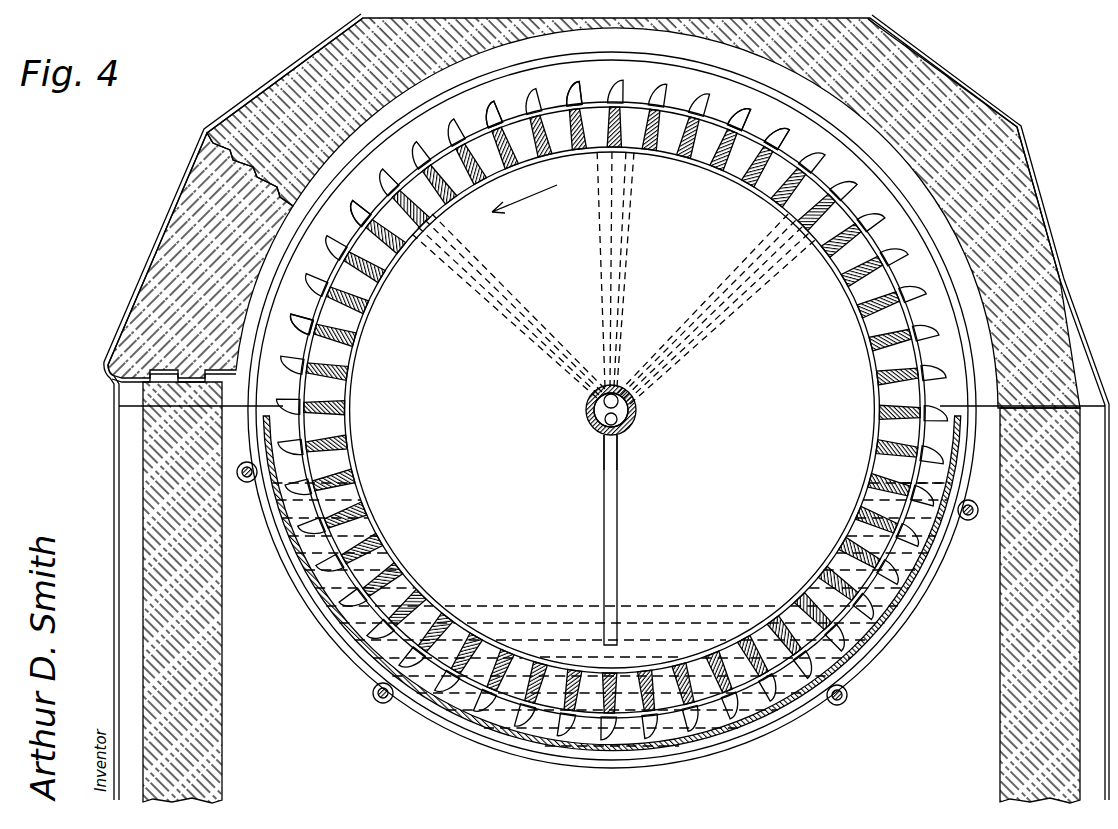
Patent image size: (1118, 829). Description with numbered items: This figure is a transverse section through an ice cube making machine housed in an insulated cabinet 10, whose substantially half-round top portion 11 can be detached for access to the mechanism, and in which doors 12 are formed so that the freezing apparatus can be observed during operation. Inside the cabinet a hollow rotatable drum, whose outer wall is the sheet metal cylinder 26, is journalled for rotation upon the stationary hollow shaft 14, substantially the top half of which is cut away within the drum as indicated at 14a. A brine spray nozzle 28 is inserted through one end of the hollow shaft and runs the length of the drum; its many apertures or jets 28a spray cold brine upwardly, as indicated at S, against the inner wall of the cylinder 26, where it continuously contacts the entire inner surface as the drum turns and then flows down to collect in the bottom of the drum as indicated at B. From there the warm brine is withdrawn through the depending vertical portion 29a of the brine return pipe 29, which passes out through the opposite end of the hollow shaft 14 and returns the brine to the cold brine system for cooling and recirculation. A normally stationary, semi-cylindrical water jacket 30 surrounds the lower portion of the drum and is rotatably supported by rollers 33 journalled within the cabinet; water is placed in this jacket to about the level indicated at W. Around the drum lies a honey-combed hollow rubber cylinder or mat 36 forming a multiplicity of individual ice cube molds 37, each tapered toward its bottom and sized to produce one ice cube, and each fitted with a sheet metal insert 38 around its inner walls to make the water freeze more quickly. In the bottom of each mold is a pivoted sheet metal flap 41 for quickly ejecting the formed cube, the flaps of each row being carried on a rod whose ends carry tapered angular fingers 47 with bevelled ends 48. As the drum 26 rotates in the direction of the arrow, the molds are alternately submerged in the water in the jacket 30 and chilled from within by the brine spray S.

The cabinet 10 is at (203, 657).
The half-round top portion 11 is at (318, 82).
The door 12 is at (165, 243).
The shaft 14 is at (628, 428).
The cut-away portion of hollow shaft 14a is at (637, 408).
The sheet metal cylinder 26 is at (346, 428).
The brine spray nozzle 28 is at (590, 418).
The apertures or jets 28a is at (588, 398).
The brine return pipe 29 is at (590, 452).
The depending portion of brine return pipe 29a is at (616, 505).
The water jacket 30 is at (895, 620).
The rollers 33 is at (247, 483).
The hollow rubber cylinder or mat 36 is at (590, 100).
The ice cube mold 37 is at (428, 157).
The sheet metal insert 38 is at (503, 118).
The pivoted flap 41 is at (446, 208).
The angular fingers 47 is at (770, 138).
The bevelled ends 48 is at (357, 212).
The brine spray S is at (508, 312).
The collected brine B is at (531, 623).
The water level W is at (940, 477).